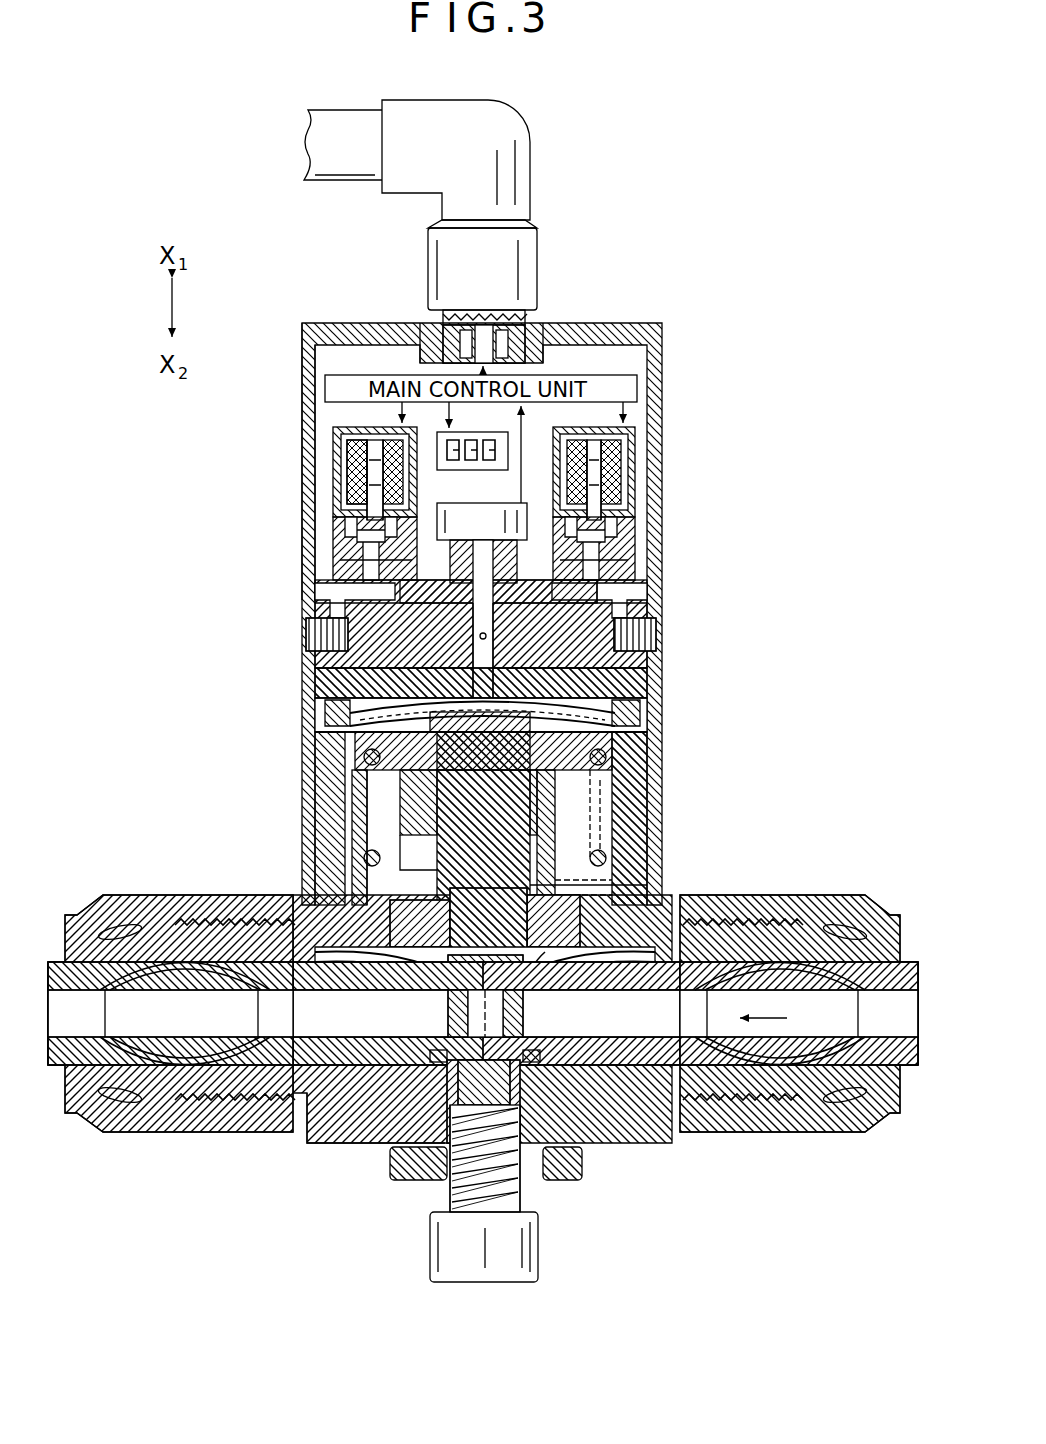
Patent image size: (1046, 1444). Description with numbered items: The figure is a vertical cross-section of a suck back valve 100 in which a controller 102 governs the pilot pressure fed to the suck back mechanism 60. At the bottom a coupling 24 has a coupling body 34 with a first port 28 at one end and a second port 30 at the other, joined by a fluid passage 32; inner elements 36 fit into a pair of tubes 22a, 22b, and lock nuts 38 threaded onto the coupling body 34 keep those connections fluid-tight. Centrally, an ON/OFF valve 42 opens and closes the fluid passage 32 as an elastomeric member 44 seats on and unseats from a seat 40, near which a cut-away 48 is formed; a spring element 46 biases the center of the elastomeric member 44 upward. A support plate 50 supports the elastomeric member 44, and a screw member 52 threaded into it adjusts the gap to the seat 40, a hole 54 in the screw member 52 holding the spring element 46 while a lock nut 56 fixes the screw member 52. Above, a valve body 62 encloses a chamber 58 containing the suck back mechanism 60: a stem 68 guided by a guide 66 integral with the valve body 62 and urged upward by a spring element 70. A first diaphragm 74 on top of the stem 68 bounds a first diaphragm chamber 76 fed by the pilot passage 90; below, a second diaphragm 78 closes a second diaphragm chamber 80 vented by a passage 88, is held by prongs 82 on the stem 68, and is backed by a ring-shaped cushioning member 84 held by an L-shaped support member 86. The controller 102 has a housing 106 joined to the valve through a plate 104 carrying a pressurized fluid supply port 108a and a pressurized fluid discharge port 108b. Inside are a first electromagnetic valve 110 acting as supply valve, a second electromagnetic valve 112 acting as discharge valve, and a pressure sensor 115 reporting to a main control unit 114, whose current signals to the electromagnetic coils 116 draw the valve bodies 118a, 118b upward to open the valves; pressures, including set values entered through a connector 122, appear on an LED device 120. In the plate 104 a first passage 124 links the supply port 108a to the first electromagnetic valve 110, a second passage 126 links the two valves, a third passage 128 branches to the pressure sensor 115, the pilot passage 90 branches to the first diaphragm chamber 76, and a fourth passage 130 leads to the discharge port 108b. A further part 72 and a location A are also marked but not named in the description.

The suck back valve 100 is at (652, 180).
The connector 122 is at (510, 268).
The controller 102 is at (662, 398).
The housing 106 is at (306, 372).
The main control unit 114 is at (660, 366).
The LED device 120 is at (335, 430).
The pressure sensor 115 is at (462, 503).
The first electromagnetic valve 110 is at (335, 458).
The second electromagnetic valve 112 is at (640, 470).
The electromagnetic coils 116 is at (328, 440).
The valve body 118a is at (345, 535).
The valve body 118b is at (625, 540).
The first passage 124 is at (336, 560).
The fourth passage 130 is at (620, 560).
The plate 104 is at (345, 648).
The pressurized fluid supply port 108a is at (320, 628).
The pressurized fluid discharge port 108b is at (645, 630).
The pilot passage 90 is at (470, 632).
The third passage 128 is at (620, 590).
The second passage 126 is at (620, 662).
The first diaphragm chamber 76 is at (340, 700).
The first diaphragm 74 is at (612, 712).
The valve body 62 is at (340, 732).
The chamber 58 is at (625, 760).
The spring element 70 is at (365, 768).
The suck back mechanism 60 is at (570, 784).
The guide 66 is at (358, 792).
The stem 68 is at (430, 800).
The return spring 72 is at (430, 832).
The second diaphragm chamber 80 is at (590, 830).
The passage 88 is at (585, 880).
The cut-away 48 is at (605, 886).
The fluid passage 32 is at (300, 1140).
The coupling body 34 is at (690, 1090).
The support plate 50 is at (350, 1143).
The support member 86 is at (400, 900).
The prongs 82 is at (385, 895).
The second diaphragm 78 is at (400, 966).
The cushioning member 84 is at (330, 972).
The seat 40 is at (445, 978).
The ON/OFF valve 42 is at (548, 1013).
The flow direction A is at (550, 990).
The coupling 24 is at (262, 1148).
The tube 22a is at (100, 1115).
The tube 22b is at (885, 1132).
The first port 28 is at (197, 1120).
The second port 30 is at (762, 1118).
The inner elements 36 is at (240, 1130).
The lock nuts 38 is at (150, 1130).
The lock nut 56 is at (545, 1140).
The elastomeric member 44 is at (565, 1062).
The hole 54 is at (400, 1148).
The spring element 46 is at (548, 1172).
The screw member 52 is at (522, 1262).